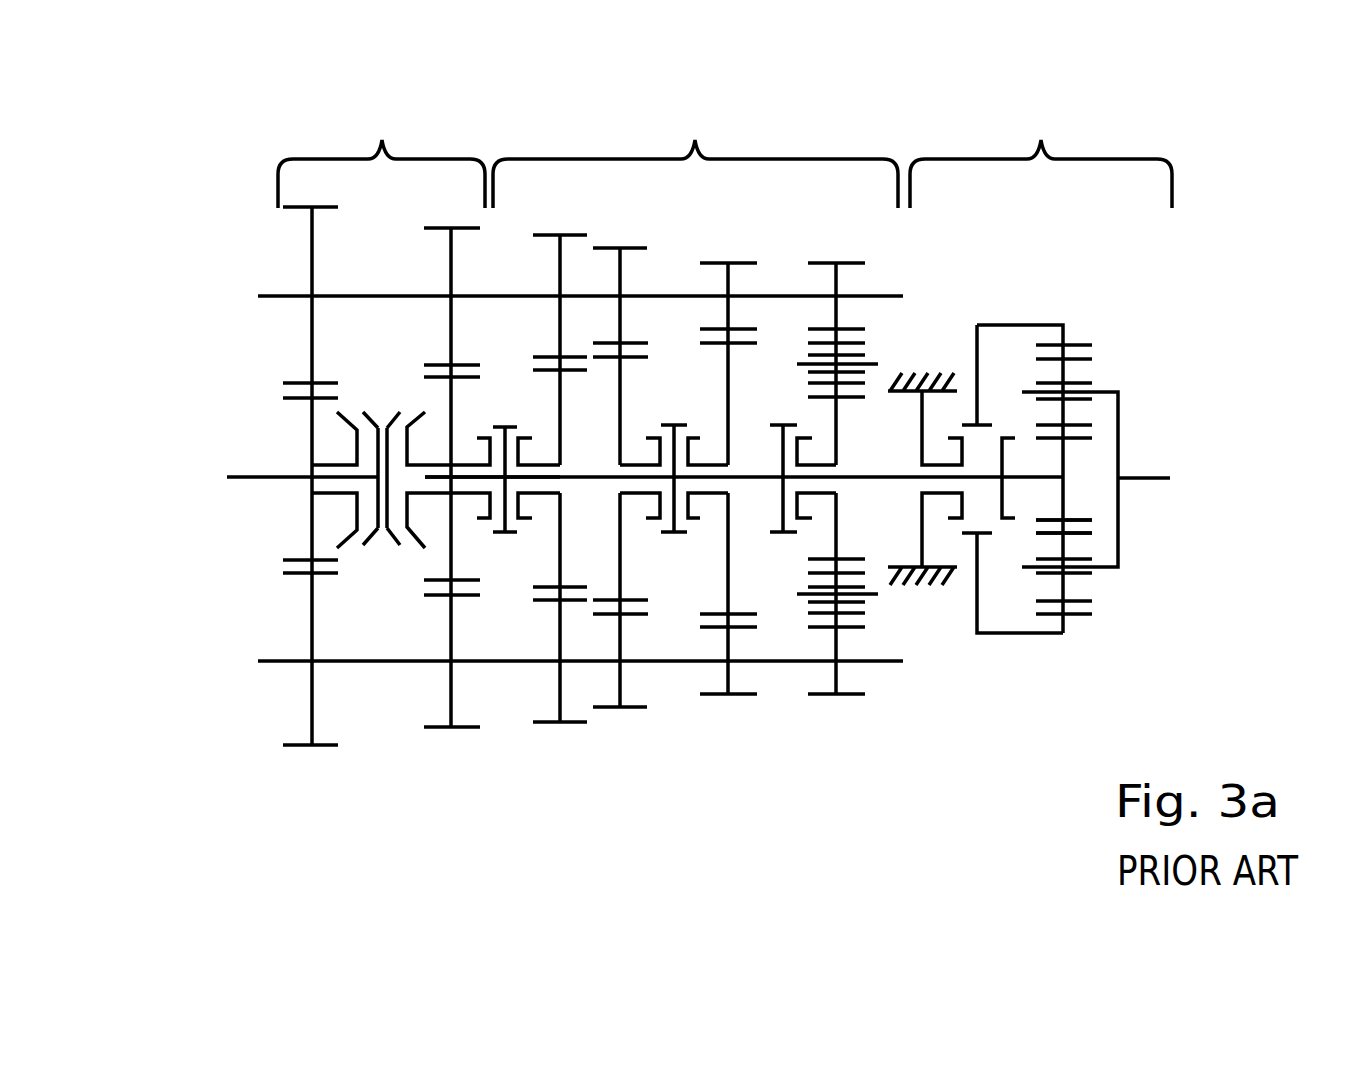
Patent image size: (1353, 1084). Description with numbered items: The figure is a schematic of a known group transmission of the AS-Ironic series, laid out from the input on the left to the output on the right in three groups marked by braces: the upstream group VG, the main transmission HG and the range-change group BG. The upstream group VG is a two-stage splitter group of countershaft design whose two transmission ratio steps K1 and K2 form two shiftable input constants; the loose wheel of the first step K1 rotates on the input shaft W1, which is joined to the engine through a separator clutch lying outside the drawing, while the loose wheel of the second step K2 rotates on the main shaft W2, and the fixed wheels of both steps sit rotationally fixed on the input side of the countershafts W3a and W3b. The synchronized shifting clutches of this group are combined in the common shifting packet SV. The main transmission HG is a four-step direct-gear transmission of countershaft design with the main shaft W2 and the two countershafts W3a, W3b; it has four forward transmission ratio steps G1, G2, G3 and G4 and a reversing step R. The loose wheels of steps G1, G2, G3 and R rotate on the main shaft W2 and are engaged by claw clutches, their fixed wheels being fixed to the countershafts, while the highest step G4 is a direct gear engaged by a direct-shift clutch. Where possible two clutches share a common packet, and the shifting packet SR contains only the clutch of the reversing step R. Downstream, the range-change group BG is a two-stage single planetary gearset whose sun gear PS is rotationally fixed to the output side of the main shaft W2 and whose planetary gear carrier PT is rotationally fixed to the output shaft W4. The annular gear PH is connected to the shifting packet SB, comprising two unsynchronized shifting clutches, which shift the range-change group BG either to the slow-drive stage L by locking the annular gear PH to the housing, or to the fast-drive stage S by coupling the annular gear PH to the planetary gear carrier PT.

The upstream group VG is at (381, 157).
The main transmission HG is at (695, 157).
The range-change group BG is at (1041, 157).
The first transmission ratio step K1 is at (316, 476).
The second transmission ratio step K2 is at (443, 477).
The shifting packet SV is at (381, 461).
The fourth transmission ratio step G4 is at (458, 344).
The third transmission ratio step G3 is at (560, 460).
The second transmission ratio step G2 is at (620, 460).
The first transmission ratio step G1 is at (728, 460).
The transmission ratio step for reversing R is at (837, 460).
The shifting packet SR is at (801, 460).
The shifting packet SB is at (956, 395).
The slow-drive stage L is at (975, 563).
The fast-drive stage S is at (1053, 528).
The annular gear PH is at (1022, 325).
The planetary gear carrier PT is at (1110, 390).
The sun gear PS is at (1063, 468).
The input shaft W1 is at (278, 477).
The main shaft W2 is at (592, 477).
The countershaft W3a is at (277, 296).
The countershaft W3b is at (277, 661).
The output shaft W4 is at (1138, 480).